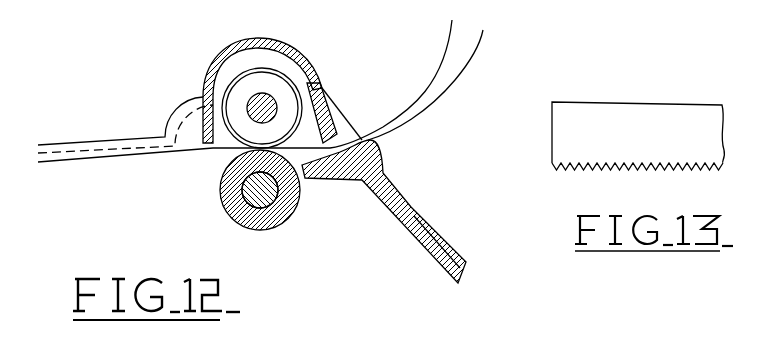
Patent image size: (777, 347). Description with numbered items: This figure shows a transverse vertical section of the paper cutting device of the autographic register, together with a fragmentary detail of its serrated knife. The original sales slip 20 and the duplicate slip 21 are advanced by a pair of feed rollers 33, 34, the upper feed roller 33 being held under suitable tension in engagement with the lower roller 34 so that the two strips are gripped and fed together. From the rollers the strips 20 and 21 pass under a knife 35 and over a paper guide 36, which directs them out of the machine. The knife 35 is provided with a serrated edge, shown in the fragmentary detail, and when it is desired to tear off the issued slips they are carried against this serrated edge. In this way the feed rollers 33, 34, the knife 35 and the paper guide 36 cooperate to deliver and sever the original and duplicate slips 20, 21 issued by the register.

In FIG. 12, the original sales slip 20 is at (440, 74).
In FIG. 12, the duplicate slip 21 is at (444, 98).
In FIG. 12, the upper feed roller 33 is at (216, 84).
In FIG. 12, the feed roller 34 is at (292, 218).
In FIG. 12, the knife 35 is at (353, 138).
In FIG. 13, the knife 35 is at (600, 103).
In FIG. 12, the paper guide 36 is at (378, 143).